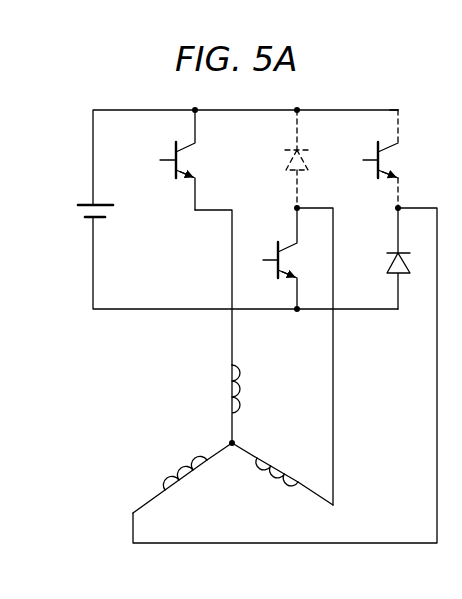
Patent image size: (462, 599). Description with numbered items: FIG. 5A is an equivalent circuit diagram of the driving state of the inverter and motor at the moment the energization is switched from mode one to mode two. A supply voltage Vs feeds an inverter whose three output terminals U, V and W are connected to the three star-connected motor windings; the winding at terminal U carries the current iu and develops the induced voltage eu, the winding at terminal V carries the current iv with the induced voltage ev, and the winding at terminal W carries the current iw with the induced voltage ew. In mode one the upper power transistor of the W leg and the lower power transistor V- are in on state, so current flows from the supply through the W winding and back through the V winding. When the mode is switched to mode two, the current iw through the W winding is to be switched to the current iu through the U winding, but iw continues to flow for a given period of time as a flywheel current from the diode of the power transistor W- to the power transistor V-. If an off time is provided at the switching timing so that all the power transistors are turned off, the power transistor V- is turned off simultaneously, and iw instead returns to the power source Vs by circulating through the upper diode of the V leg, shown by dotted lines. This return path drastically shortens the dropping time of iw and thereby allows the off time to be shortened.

The DC supply voltage source Vs is at (88, 200).
The U phase terminal U is at (195, 100).
The V phase terminal V is at (297, 100).
The W phase terminal W is at (396, 98).
The power transistor V- is at (281, 260).
The power transistor W- is at (388, 258).
The U phase winding back EMF eu is at (215, 380).
The current iu is at (253, 378).
The V phase winding back EMF ev is at (283, 492).
The V phase winding current iv is at (303, 463).
The W phase winding back EMF ew is at (192, 452).
The current iw is at (208, 479).